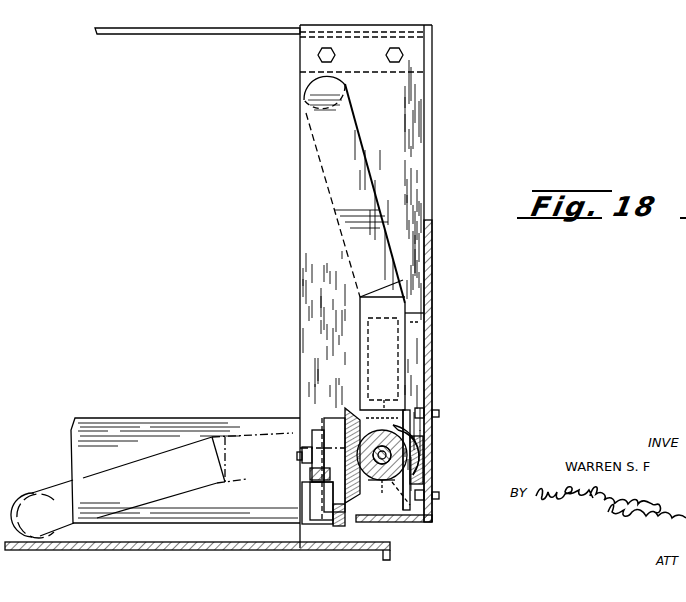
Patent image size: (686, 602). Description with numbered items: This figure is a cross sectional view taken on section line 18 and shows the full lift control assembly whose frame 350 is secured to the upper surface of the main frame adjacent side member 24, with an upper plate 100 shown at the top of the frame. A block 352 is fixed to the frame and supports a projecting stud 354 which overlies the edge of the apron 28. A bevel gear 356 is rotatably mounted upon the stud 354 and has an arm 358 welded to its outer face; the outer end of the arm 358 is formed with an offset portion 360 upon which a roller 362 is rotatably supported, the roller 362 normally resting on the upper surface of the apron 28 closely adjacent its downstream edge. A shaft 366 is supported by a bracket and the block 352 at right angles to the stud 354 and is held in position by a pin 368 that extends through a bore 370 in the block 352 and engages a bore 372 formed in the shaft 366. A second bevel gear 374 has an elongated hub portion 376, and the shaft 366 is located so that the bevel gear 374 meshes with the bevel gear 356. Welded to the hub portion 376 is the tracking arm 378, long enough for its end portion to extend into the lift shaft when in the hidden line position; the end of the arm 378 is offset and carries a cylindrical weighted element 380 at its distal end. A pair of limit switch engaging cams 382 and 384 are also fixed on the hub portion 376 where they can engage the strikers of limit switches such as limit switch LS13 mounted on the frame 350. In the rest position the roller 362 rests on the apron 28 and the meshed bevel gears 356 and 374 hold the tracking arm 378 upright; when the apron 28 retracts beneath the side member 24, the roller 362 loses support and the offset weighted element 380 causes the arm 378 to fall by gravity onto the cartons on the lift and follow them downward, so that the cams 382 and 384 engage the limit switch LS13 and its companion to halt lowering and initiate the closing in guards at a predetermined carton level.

The section line 18 is at (434, 10).
The top plate 100 is at (112, 28).
The side member 24 is at (146, 420).
The apron 28 is at (147, 549).
The frame 350 is at (433, 518).
The block 352 is at (420, 485).
The stud 354 is at (298, 457).
The bevel gear 356 is at (347, 408).
The arm 358 is at (310, 474).
The offset portion 360 is at (346, 524).
The roller 362 is at (302, 524).
The shaft 366 is at (402, 446).
The pin 368 is at (396, 428).
The bore 370 is at (398, 405).
The bore 372 is at (404, 500).
The bevel gear 374 is at (378, 482).
The hub portion 376 is at (410, 458).
The tracking arm 378 is at (349, 238).
The weighted element 380 is at (347, 97).
The limit switch engaging cam 382 is at (416, 470).
The limit switch engaging cam 384 is at (436, 414).
The limit switch LS13 is at (410, 320).